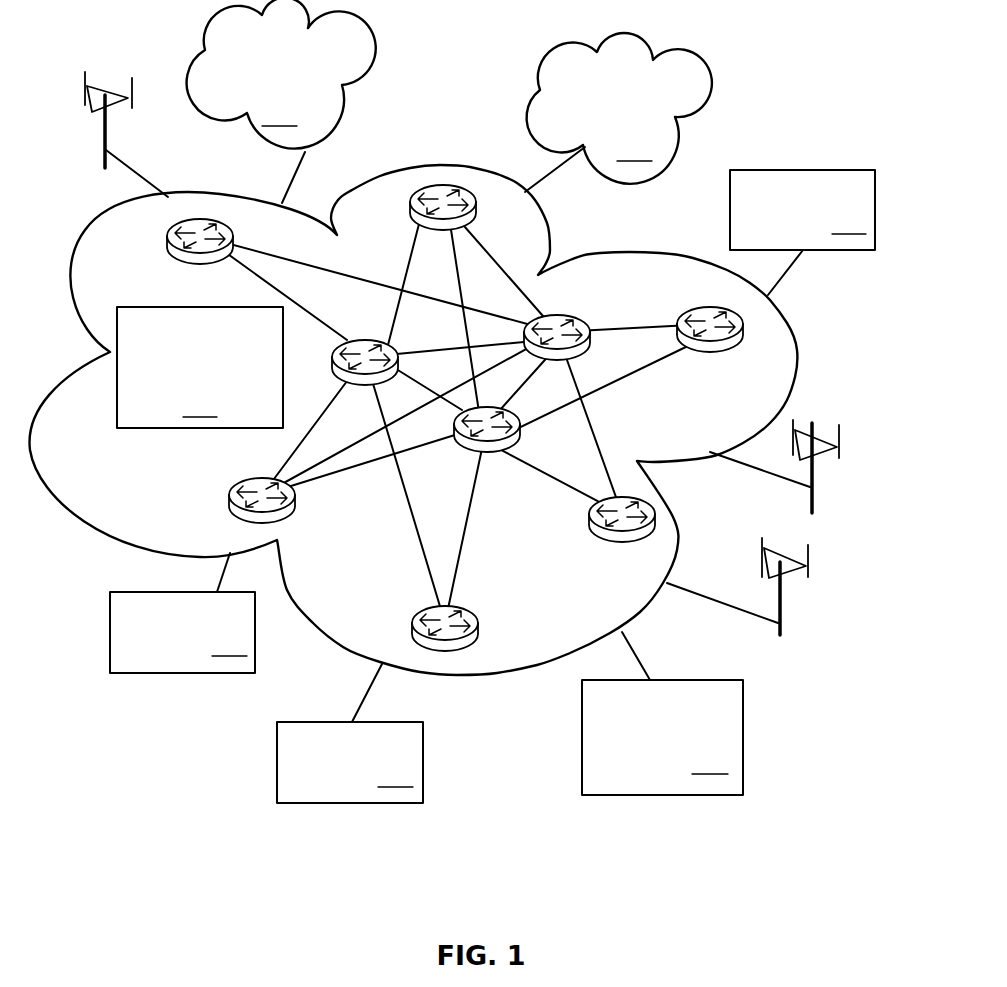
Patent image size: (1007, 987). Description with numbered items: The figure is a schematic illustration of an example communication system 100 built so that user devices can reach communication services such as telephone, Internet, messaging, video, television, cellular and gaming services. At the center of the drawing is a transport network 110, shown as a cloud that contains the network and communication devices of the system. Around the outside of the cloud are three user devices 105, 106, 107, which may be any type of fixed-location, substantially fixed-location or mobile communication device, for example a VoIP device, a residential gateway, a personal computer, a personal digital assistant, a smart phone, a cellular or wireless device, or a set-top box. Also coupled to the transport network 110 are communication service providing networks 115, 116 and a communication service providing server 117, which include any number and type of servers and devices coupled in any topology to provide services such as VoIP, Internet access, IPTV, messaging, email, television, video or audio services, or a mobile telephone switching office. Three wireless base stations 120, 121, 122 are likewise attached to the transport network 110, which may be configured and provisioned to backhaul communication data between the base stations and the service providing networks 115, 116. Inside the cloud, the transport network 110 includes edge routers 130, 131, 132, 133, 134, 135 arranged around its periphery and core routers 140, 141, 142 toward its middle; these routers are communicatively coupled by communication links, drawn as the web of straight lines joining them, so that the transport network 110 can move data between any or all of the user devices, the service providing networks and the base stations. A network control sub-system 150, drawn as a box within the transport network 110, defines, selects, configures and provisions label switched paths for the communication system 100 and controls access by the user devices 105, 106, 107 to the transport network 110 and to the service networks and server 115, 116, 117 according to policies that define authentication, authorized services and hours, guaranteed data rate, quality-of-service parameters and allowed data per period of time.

The communication system 100 is at (193, 841).
The user device 105 is at (182, 613).
The user device 106 is at (350, 733).
The user device 107 is at (802, 232).
The transport network 110 is at (100, 540).
The communication service providing network 115 is at (281, 101).
The communication service providing network 116 is at (618, 112).
The communication service providing server 117 is at (662, 713).
The wireless base station 120 is at (102, 151).
The wireless base station 121 is at (817, 492).
The wireless base station 122 is at (785, 608).
The edge router 130 is at (195, 262).
The edge router 131 is at (272, 518).
The edge router 132 is at (468, 607).
The edge router 133 is at (638, 540).
The edge router 134 is at (702, 348).
The edge router 135 is at (420, 227).
The core router 140 is at (470, 452).
The core router 141 is at (582, 315).
The core router 142 is at (378, 340).
The network control sub-system 150 is at (200, 367).